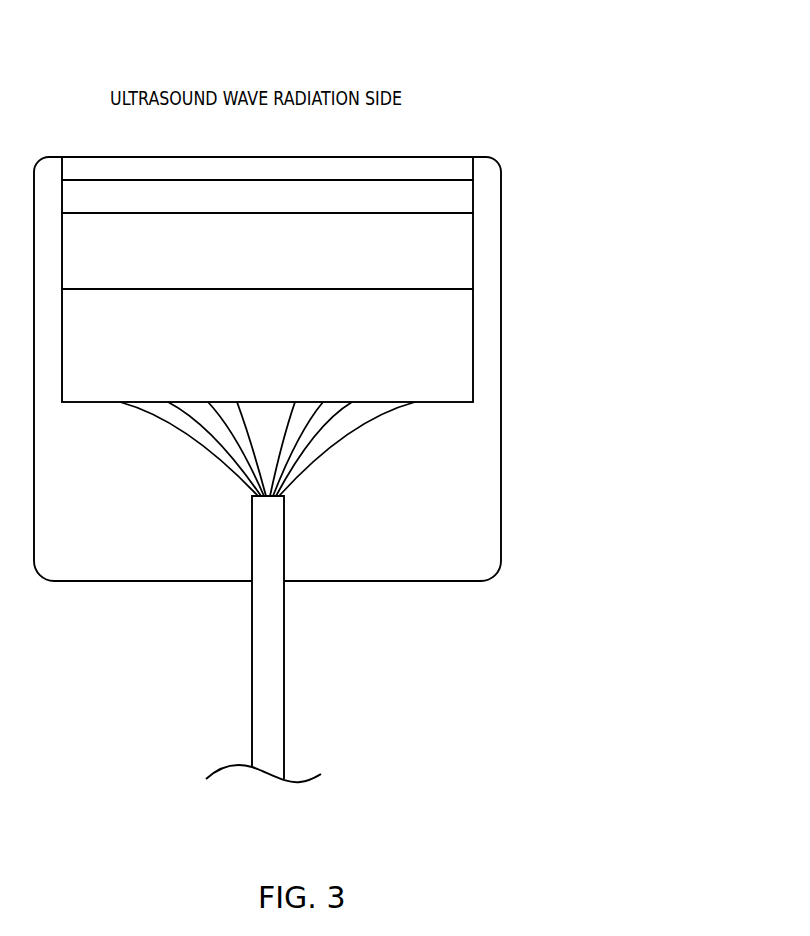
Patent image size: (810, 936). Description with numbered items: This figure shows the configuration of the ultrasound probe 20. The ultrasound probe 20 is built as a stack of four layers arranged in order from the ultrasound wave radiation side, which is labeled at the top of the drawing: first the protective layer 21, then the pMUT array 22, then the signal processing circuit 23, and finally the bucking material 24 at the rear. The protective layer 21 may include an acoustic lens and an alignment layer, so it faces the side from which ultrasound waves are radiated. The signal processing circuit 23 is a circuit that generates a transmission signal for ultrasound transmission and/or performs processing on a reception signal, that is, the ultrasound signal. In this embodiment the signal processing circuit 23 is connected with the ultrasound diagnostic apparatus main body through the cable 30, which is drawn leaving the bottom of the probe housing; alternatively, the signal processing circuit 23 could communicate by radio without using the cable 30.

The ultrasound probe 20 is at (471, 114).
The protective layer 21 is at (466, 175).
The pMUT array 22 is at (466, 203).
The signal processing circuit 23 is at (466, 260).
The bucking material 24 is at (466, 350).
The cable 30 is at (280, 722).